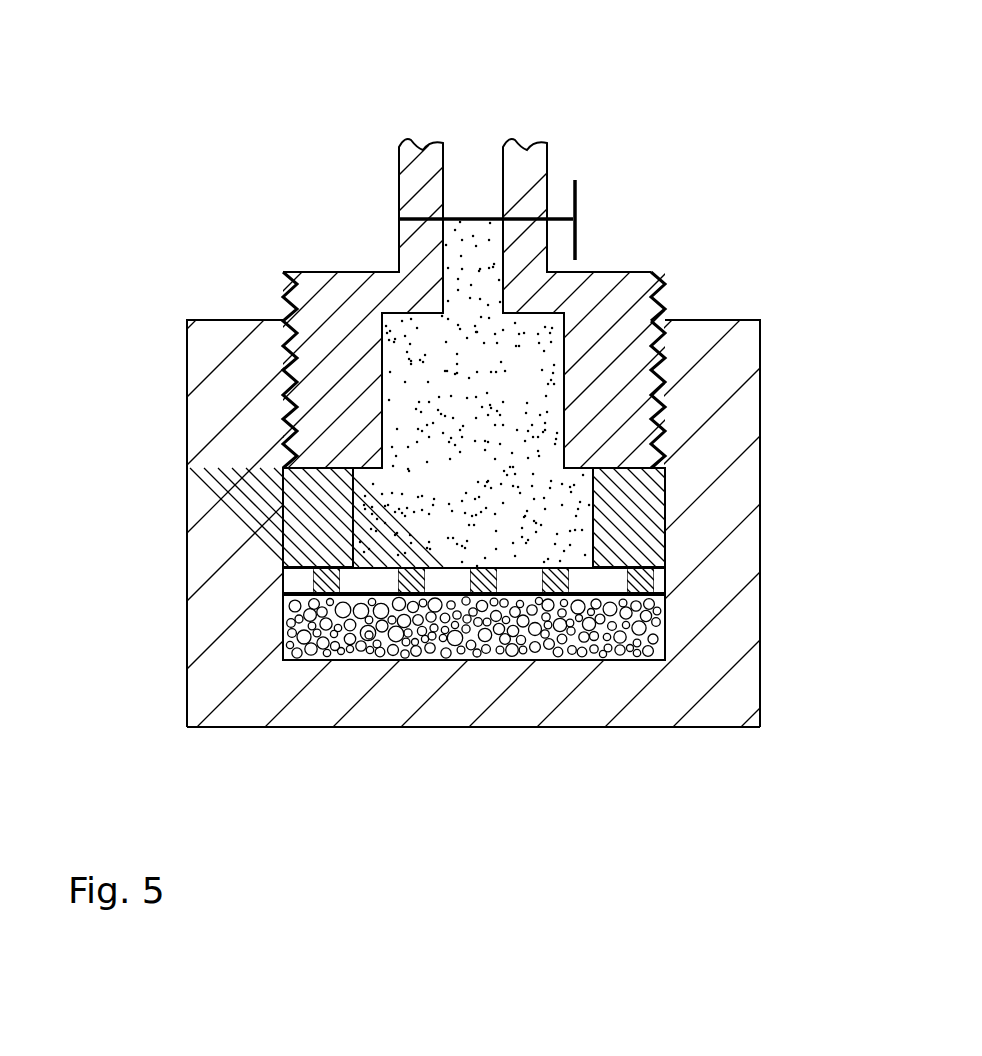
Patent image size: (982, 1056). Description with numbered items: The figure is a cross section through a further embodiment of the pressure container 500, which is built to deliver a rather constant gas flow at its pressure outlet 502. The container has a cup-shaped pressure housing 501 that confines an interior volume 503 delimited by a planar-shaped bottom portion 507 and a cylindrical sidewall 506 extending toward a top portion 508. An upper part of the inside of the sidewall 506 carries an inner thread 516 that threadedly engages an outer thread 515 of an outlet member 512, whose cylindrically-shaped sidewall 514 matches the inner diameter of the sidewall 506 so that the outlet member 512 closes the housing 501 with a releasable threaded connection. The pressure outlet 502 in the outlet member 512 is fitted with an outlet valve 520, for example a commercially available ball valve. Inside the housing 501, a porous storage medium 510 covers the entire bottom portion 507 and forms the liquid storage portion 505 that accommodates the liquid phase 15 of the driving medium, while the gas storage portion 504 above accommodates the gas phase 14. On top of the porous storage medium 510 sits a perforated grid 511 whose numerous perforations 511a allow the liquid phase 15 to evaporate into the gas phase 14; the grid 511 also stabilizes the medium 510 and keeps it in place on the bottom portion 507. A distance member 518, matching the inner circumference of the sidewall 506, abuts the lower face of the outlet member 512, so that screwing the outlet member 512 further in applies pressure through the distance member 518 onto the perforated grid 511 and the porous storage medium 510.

The pressure container 500 is at (244, 178).
The pressure housing 501 is at (218, 678).
The pressure outlet 502 is at (480, 95).
The interior volume 503 is at (572, 496).
The gas storage portion 504 is at (383, 535).
The liquid storage portion 505 is at (652, 627).
The sidewall 506 is at (737, 506).
The bottom portion 507 is at (547, 690).
The top portion 508 is at (338, 290).
The porous storage medium 510 is at (433, 640).
The perforated grid 511 is at (647, 582).
The perforations 511a is at (508, 580).
The outlet member 512 is at (611, 290).
The sidewall of the outlet member 514 is at (625, 412).
The outer thread 515 is at (665, 303).
The inner thread 516 is at (658, 365).
The distance member 518 is at (648, 547).
The outlet valve 520 is at (560, 208).
The gas phase 14 is at (410, 412).
The liquid phase 15 is at (370, 640).